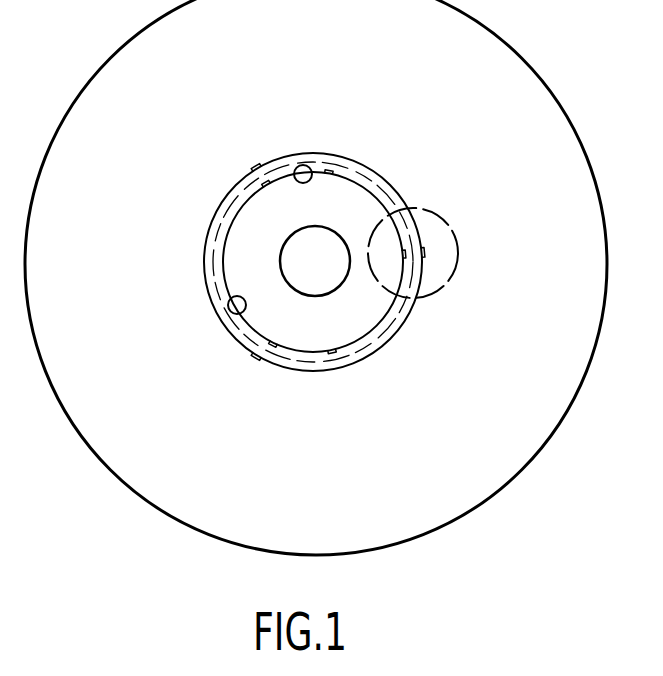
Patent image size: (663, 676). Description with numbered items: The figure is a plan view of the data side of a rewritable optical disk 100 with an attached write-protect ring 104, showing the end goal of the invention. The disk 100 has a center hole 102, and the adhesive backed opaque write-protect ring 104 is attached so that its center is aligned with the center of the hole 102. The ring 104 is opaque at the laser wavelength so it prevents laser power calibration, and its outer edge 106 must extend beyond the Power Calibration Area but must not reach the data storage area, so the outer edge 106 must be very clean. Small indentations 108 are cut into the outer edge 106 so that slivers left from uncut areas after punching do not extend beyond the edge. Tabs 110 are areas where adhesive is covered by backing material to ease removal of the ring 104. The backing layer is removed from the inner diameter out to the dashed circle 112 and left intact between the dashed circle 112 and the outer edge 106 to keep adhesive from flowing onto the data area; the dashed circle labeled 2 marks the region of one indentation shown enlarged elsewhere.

The optical disk 100 is at (503, 485).
The center hole 102 is at (282, 249).
The write-protect ring 104 is at (230, 300).
The outer edge 106 is at (372, 357).
The indentations 108 is at (422, 258).
The tabs 110 is at (298, 166).
The dashed circle 112 is at (363, 173).
The section circle for FIG. 2 is at (428, 212).